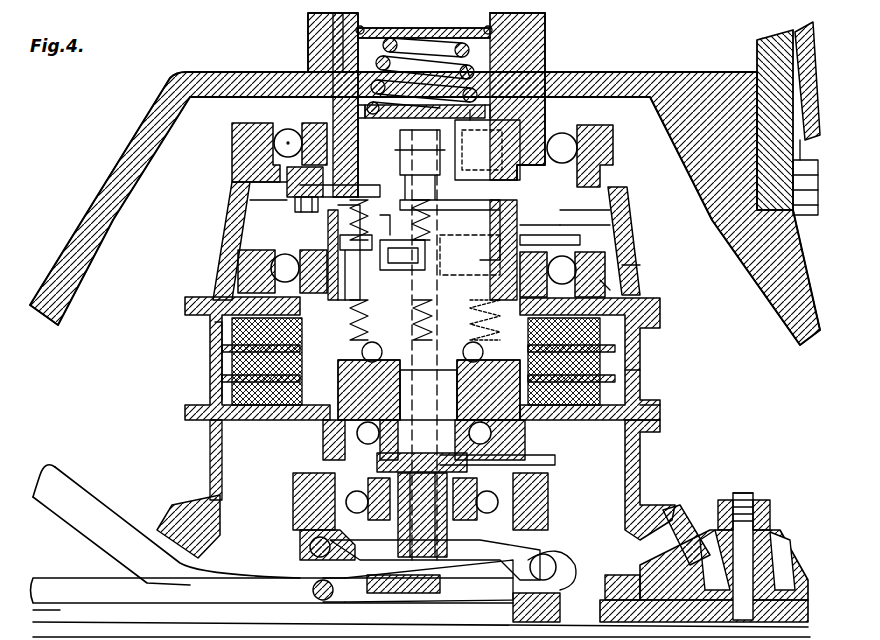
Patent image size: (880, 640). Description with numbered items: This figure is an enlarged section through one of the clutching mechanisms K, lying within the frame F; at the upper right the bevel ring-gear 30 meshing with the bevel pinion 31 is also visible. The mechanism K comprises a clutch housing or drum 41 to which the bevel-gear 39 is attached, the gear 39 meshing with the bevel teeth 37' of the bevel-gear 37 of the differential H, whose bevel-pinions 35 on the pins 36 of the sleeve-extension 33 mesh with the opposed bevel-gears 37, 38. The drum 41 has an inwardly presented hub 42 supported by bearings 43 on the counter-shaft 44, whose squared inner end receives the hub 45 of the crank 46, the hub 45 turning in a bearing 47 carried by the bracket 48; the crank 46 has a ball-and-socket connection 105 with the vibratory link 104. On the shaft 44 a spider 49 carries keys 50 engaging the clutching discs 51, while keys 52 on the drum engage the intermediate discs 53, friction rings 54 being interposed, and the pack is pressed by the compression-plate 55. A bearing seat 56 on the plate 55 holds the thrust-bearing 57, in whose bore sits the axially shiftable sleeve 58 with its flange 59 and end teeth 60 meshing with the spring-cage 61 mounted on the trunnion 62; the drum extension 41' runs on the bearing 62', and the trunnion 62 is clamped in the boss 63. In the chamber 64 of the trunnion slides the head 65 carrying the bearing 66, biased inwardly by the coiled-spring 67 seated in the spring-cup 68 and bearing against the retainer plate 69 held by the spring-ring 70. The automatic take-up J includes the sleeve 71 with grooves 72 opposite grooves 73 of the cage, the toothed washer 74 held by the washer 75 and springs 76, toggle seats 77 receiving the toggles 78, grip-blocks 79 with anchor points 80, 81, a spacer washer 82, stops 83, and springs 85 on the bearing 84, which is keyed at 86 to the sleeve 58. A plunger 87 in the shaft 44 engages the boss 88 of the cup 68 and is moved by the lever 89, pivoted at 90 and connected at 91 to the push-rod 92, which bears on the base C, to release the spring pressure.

The frame F is at (686, 72).
The bevel ring-gear 30 is at (757, 45).
The bevel pinion 31 is at (800, 28).
The boss 63 is at (358, 28).
The retainer spring-ring 70 is at (300, 30).
The retainer plate 69 is at (345, 48).
The spring-cup 68 is at (375, 62).
The axial bore or chamber 64 is at (505, 52).
The coiled-spring 67 is at (540, 20).
The boss 88 is at (475, 70).
The recessed head 65 is at (470, 118).
The extension 41' is at (258, 151).
The trunnion 62 is at (295, 127).
The bearing 62' is at (254, 121).
The bearing 66 is at (236, 150).
The longitudinal grooves 72 is at (290, 170).
The second annular washer 75 is at (285, 180).
The grooves 73 is at (300, 190).
The springs 76 is at (335, 205).
The annular washer 74 is at (330, 215).
The sleeve 71 is at (350, 225).
The stop 83 is at (410, 235).
The toggles 78 is at (340, 242).
The toggle seats 77 is at (380, 252).
The spacer washer 82 is at (440, 265).
The grip-block 79 is at (270, 262).
The outside anchor-point 81 is at (300, 278).
The inside anchor point 80 is at (350, 310).
The plunger 87 is at (505, 122).
The spring-cage 61 is at (600, 203).
The teeth 60 is at (575, 225).
The automatic take-up J is at (590, 216).
The peripheral flange 59 is at (530, 250).
The cylinder or sleeve 58 is at (610, 250).
The thrust-bearing 57 is at (600, 262).
The annular bearing seat 56 is at (640, 270).
The annular compression-plate 55 is at (608, 283).
The keys 52 is at (645, 340).
The annular clutching discs 51 is at (600, 350).
The annular clutching discs 53 is at (645, 365).
The clutch housing or drum 41 is at (651, 378).
The friction rings 54 is at (662, 405).
The clutching mechanism K is at (185, 410).
The springs 85 is at (222, 330).
The key 86 is at (232, 345).
The thrust-receiving bearing 84 is at (218, 360).
The keys 50 is at (323, 430).
The spider 49 is at (362, 440).
The bearings 43 is at (525, 436).
The hub 42 is at (520, 458).
The bracket 48 is at (293, 510).
The bearing 47 is at (320, 520).
The counter-shaft 44 is at (548, 490).
The hub 45 is at (300, 548).
The pivot 90 is at (318, 558).
The pivotal connection 91 is at (313, 592).
The lever 89 is at (400, 595).
The crank 46 is at (548, 552).
The ball-and-socket connection 105 is at (550, 562).
The sleeve-extension 33 is at (600, 605).
The bevel teeth 37' is at (705, 565).
The bevel-gear 37 is at (707, 539).
The bevel-gear 38 is at (785, 540).
The pins 36 is at (752, 495).
The bevel-pinions 35 is at (770, 520).
The differential H is at (742, 493).
The bevel-gear 39 is at (645, 505).
The vibratory link 104 is at (115, 500).
The push-rod 92 is at (97, 578).
The base C is at (55, 610).